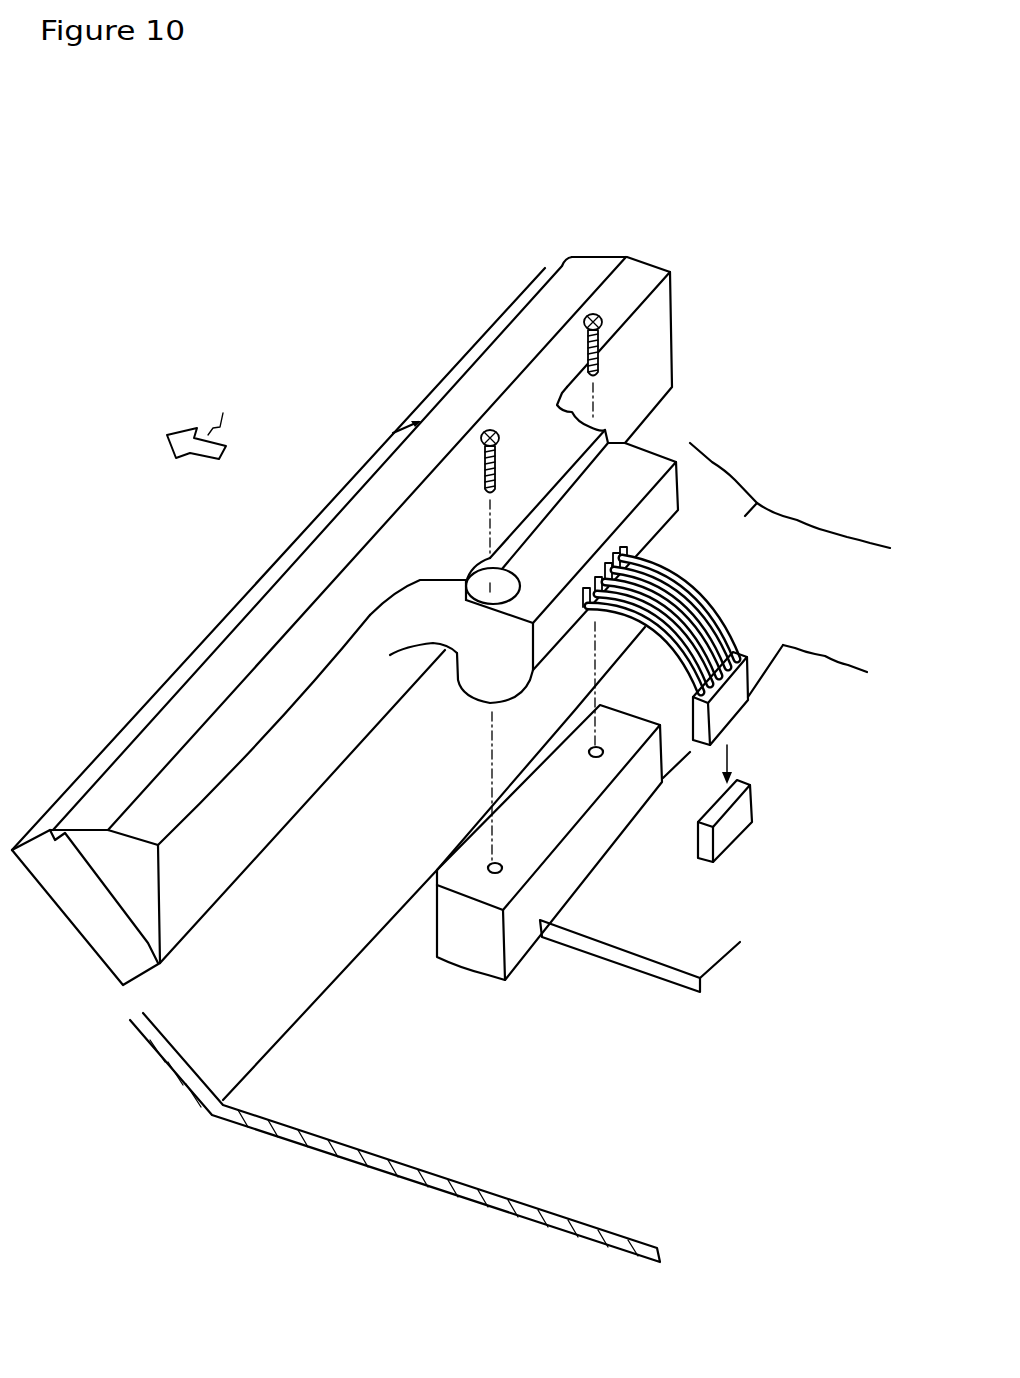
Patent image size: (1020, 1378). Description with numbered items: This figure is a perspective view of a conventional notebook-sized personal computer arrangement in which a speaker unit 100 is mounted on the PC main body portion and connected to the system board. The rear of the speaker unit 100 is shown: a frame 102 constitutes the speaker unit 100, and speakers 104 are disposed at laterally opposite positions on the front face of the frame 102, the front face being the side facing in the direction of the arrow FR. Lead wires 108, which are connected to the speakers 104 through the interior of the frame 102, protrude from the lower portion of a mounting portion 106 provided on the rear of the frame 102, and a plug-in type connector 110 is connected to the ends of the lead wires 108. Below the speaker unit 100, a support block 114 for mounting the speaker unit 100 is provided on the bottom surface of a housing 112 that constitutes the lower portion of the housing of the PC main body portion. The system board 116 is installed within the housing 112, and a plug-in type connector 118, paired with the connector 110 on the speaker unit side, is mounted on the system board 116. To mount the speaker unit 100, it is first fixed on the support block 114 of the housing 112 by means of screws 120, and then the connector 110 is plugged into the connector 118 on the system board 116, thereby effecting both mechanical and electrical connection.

The speaker unit 100 is at (410, 271).
The frame 102 is at (226, 884).
The speakers 104 is at (498, 327).
The mounting portion 106 is at (660, 513).
The lead wires 108 is at (723, 616).
The plug-in type connector 110 is at (746, 678).
The housing 112 is at (407, 1147).
The support block 114 is at (451, 872).
The system board 116 is at (650, 943).
The connector 118 is at (750, 808).
The screws 120 is at (598, 312).